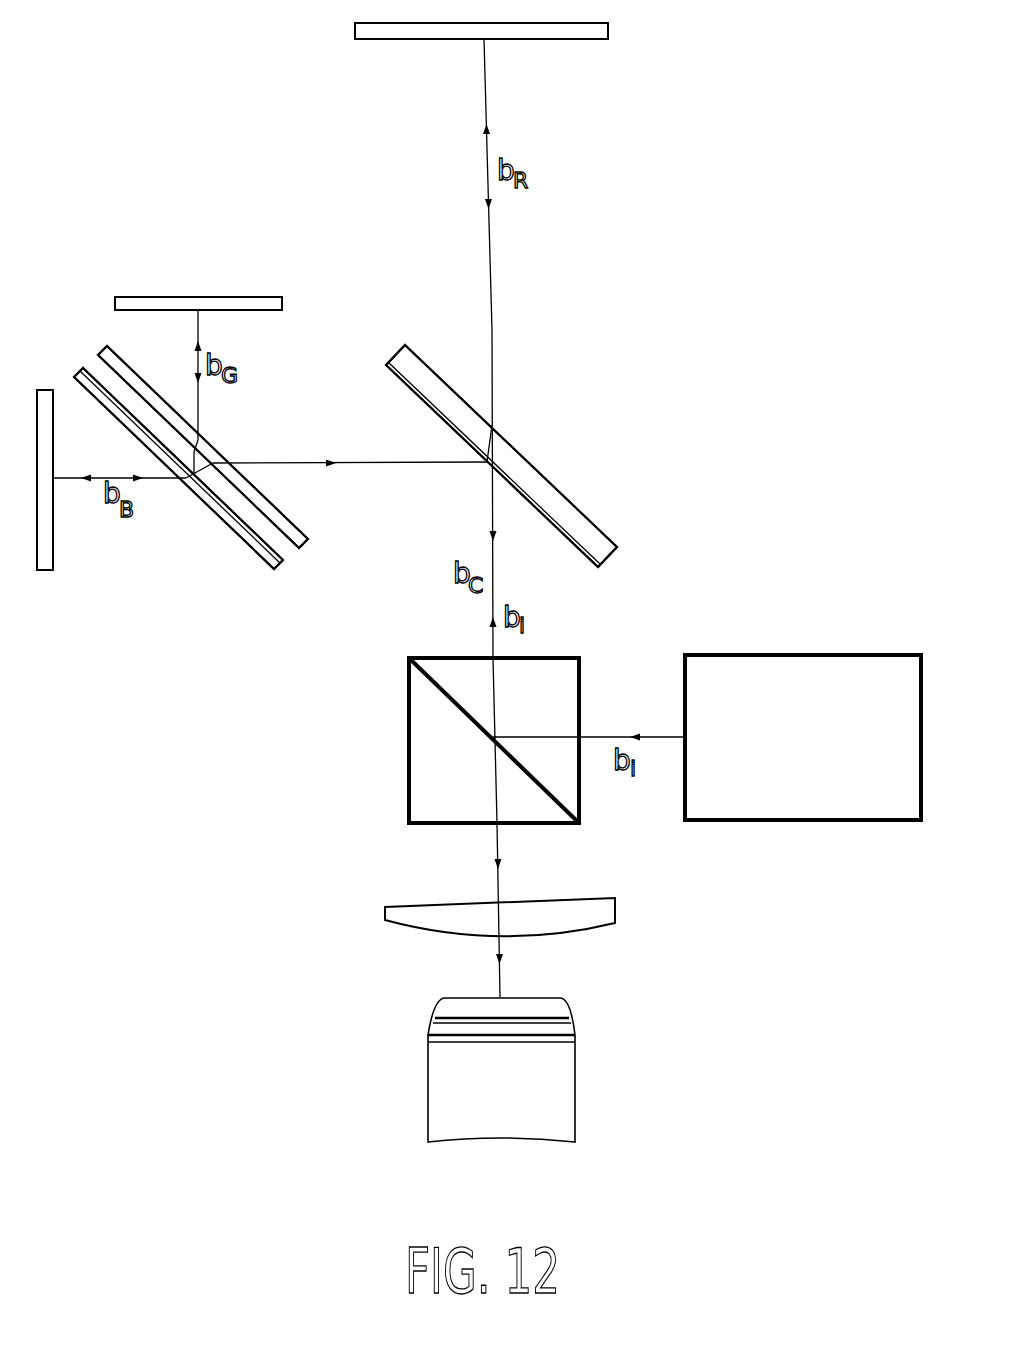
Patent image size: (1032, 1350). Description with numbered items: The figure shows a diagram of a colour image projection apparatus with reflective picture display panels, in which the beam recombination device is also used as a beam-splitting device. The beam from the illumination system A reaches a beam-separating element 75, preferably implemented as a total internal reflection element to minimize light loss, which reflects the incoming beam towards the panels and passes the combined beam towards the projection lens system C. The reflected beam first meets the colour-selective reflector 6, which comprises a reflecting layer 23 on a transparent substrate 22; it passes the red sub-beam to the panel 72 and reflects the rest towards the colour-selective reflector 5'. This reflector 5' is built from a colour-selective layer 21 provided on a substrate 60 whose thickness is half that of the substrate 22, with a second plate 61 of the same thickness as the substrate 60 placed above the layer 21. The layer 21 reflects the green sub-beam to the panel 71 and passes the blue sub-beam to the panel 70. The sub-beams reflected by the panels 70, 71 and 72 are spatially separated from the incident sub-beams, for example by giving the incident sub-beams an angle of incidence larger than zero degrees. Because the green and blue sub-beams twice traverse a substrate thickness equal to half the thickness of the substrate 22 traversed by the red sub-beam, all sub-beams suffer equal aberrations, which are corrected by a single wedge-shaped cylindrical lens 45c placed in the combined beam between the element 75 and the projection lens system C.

The panel 72 is at (609, 26).
The panel 71 is at (268, 297).
The panel 70 is at (45, 571).
The plate 61 is at (305, 545).
The substrate 60 is at (277, 574).
The colour-selective layer 21 is at (285, 560).
The substrate 22 is at (609, 552).
The reflecting layer 23 is at (590, 565).
The beam-separating element 75 is at (407, 802).
The wedge-shaped cylindrical lens 45c is at (615, 908).
The colour-selective reflector 5' is at (181, 441).
The colour-selective reflector 6 is at (382, 349).
The illumination system A is at (803, 715).
The projection lens system C is at (590, 1076).